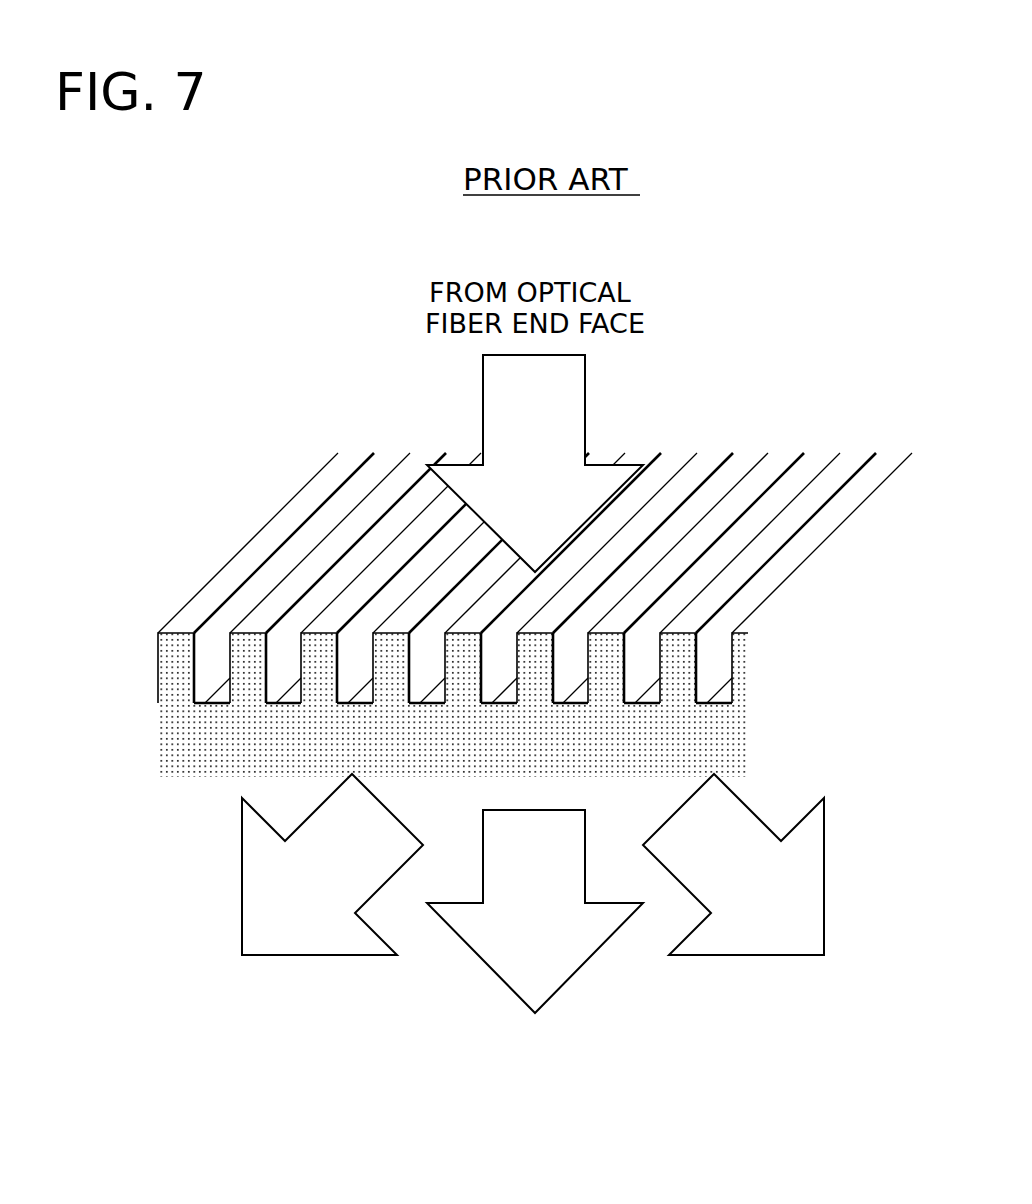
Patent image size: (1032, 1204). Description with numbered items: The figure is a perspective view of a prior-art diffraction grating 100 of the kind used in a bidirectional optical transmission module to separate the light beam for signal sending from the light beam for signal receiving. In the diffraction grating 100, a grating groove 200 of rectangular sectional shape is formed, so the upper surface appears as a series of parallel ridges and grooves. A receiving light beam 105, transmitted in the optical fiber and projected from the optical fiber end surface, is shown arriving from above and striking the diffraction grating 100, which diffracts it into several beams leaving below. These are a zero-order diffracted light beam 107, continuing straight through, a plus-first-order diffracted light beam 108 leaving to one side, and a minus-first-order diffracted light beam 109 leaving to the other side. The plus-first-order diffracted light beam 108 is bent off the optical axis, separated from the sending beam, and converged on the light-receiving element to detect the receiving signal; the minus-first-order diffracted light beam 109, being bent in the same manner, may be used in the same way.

The diffraction grating 100 is at (175, 733).
The grating groove 200 is at (293, 673).
The receiving light beam 105 is at (573, 407).
The 0-order diffracted light beam 107 is at (475, 957).
The +1-order diffracted light beam 108 is at (240, 827).
The -1-order diffracted light beam 109 is at (826, 831).